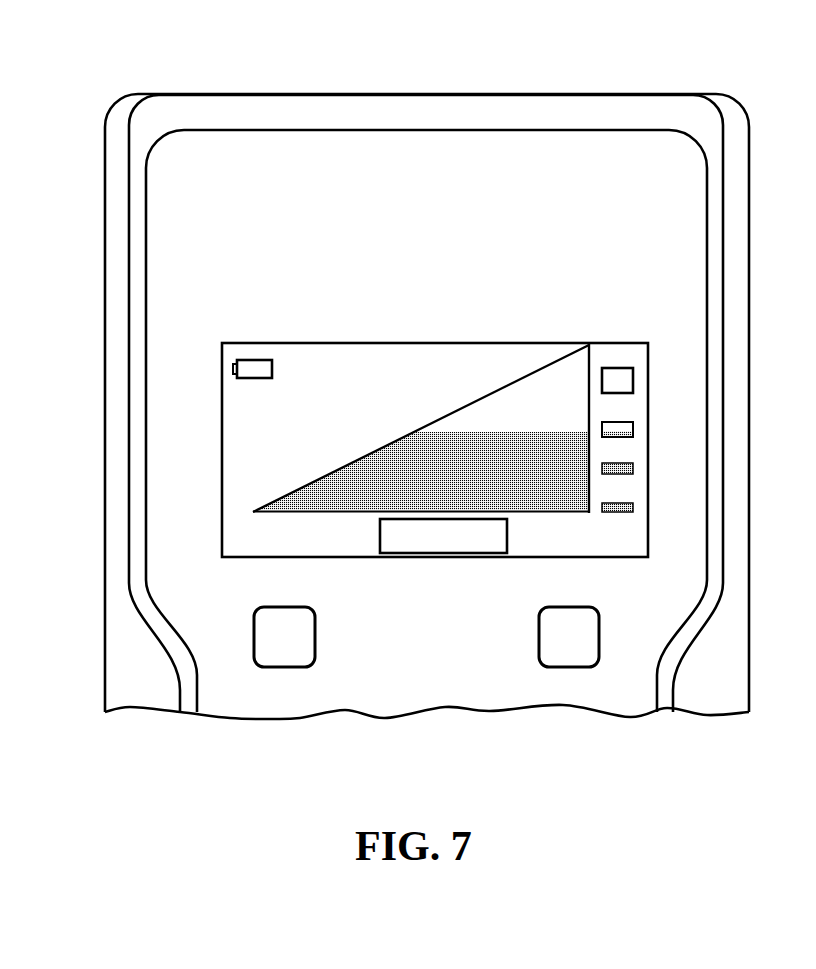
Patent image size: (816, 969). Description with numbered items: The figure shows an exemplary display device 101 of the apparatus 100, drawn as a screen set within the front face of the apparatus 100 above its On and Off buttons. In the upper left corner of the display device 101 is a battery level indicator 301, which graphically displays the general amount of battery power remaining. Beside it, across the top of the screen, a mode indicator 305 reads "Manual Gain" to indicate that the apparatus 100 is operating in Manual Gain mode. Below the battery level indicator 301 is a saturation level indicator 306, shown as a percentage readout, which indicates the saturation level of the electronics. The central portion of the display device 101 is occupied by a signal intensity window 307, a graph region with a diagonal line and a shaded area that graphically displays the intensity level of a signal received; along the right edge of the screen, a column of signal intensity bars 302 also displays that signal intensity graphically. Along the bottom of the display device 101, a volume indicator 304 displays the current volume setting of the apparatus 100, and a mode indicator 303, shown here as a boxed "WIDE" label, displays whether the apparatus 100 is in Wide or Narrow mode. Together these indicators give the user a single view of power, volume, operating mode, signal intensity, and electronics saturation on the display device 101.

The apparatus 100 is at (743, 72).
The display device 101 is at (280, 348).
The battery level indicator 301 is at (263, 359).
The signal intensity bars 302 is at (618, 384).
The mode indicator 303 is at (415, 546).
The volume indicator 304 is at (305, 552).
The mode indicator 305 is at (363, 355).
The saturation level indicator 306 is at (263, 421).
The signal intensity window 307 is at (571, 378).